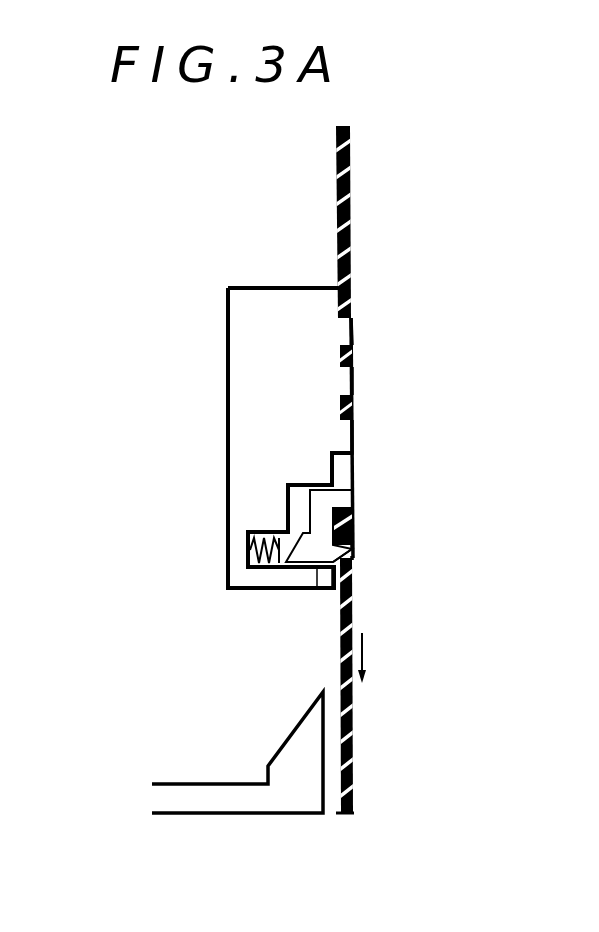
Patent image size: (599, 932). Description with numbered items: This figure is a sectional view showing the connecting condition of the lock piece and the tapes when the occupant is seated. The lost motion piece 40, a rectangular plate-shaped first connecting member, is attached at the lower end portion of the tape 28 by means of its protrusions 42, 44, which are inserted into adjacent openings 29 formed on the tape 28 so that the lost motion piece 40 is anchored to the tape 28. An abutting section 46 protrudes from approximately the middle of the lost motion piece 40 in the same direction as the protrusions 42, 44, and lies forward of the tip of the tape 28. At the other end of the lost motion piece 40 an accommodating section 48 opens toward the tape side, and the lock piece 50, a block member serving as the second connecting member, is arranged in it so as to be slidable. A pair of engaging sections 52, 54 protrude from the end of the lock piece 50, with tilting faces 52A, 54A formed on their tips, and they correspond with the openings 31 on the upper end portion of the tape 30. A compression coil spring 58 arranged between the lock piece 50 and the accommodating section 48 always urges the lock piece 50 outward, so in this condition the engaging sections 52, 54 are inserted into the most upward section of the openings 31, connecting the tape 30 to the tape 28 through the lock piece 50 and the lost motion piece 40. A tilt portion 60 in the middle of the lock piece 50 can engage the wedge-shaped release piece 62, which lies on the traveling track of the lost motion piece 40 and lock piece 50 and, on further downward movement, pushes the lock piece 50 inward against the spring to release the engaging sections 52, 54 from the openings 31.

The tape 28 is at (350, 222).
The openings 29 is at (352, 318).
The tape 30 is at (357, 720).
The openings 31 is at (353, 517).
The lost motion piece 40 is at (228, 423).
The protrusion 42 is at (355, 328).
The protrusion 44 is at (356, 392).
The abutting section 46 is at (355, 447).
The accommodating section 48 is at (247, 545).
The lock piece 50 is at (288, 508).
The engaging section 52 is at (353, 492).
The tilting face 52A is at (353, 513).
The engaging section 54 is at (353, 548).
The tilting face 54A is at (353, 567).
The compression coil spring 58 is at (260, 572).
The tilt portion 60 is at (314, 590).
The release piece 62 is at (292, 750).